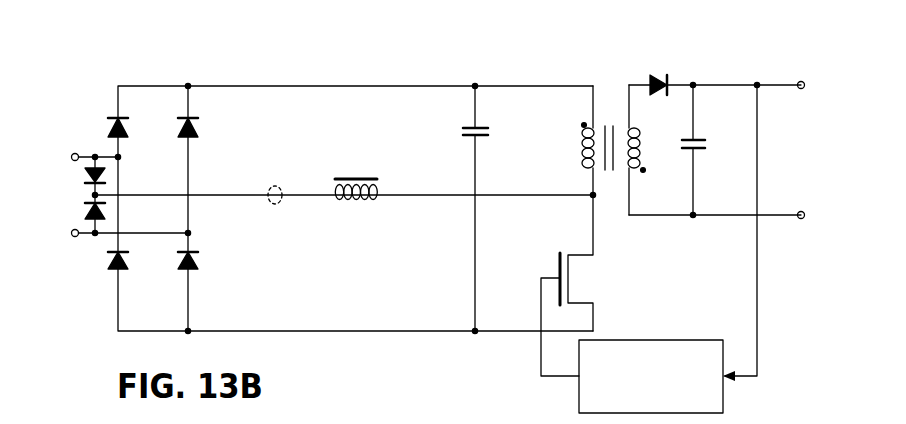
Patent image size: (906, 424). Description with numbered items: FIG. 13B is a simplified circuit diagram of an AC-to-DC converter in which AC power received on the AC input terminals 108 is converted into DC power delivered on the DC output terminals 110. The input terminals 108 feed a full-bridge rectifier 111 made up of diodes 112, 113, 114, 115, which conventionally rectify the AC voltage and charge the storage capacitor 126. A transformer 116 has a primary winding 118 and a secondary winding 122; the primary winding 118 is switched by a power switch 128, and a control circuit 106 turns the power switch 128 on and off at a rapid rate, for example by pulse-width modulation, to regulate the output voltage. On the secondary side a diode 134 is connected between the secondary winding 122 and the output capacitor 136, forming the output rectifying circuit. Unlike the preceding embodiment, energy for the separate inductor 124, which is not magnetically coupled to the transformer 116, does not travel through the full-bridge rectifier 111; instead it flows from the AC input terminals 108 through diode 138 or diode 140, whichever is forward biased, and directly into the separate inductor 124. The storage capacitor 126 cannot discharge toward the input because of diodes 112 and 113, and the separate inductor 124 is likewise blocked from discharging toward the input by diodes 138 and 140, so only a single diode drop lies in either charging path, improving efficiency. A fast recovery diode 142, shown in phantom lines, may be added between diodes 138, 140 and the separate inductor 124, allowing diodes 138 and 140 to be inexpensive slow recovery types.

The control circuit 106 is at (688, 338).
The AC input terminals 108 is at (73, 153).
The DC output terminals 110 is at (803, 81).
The full-bridge rectifier 111 is at (149, 74).
The diode 112 is at (128, 134).
The diode 113 is at (198, 134).
The diode 114 is at (198, 268).
The diode 115 is at (128, 268).
The transformer 116 is at (602, 111).
The primary winding 118 is at (580, 148).
The secondary winding 122 is at (640, 138).
The separate inductor 124 is at (360, 203).
The storage capacitor 126 is at (464, 136).
The power switch 128 is at (556, 270).
The diode 134 is at (656, 77).
The output capacitor 136 is at (700, 139).
The diode 138 is at (85, 174).
The diode 140 is at (85, 211).
The fast recovery diode 142 is at (271, 204).